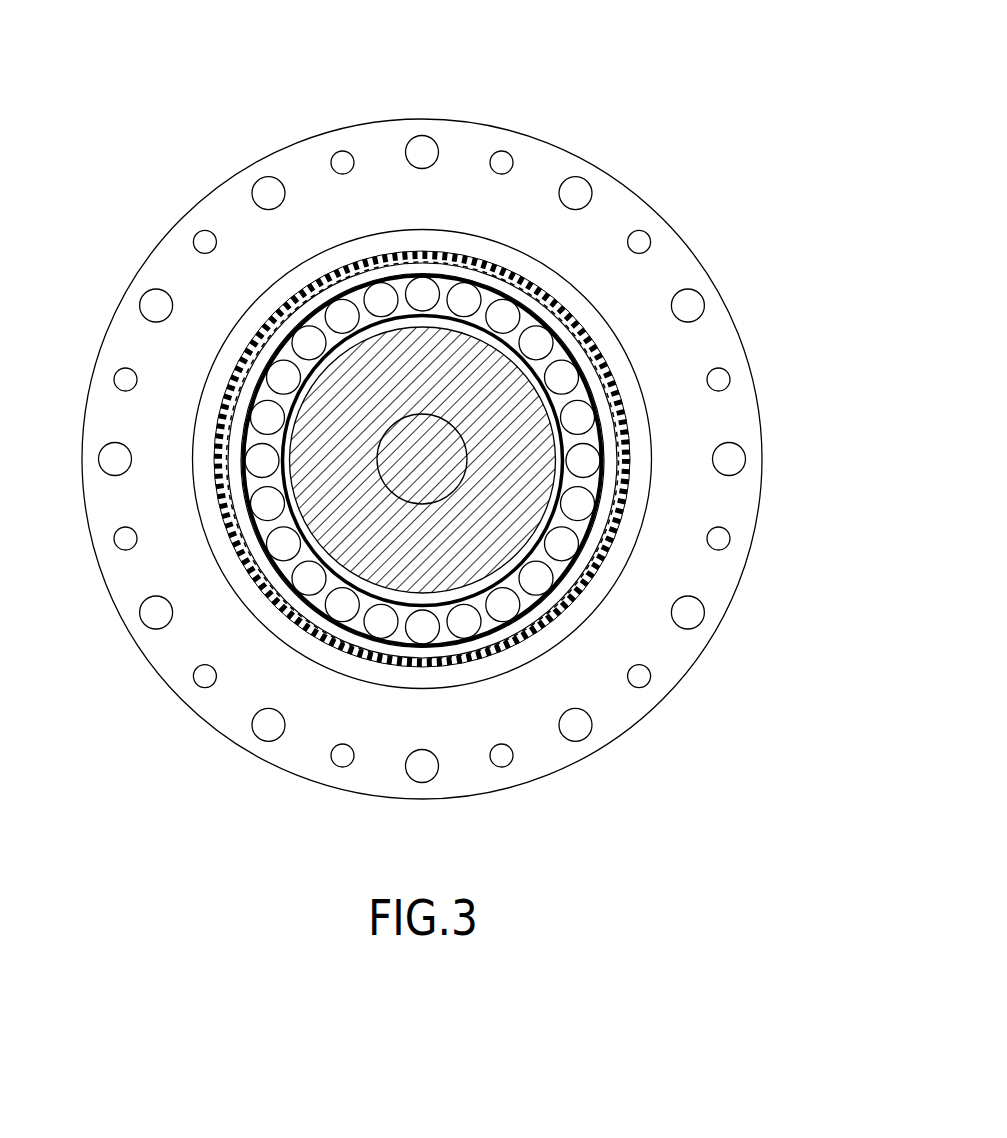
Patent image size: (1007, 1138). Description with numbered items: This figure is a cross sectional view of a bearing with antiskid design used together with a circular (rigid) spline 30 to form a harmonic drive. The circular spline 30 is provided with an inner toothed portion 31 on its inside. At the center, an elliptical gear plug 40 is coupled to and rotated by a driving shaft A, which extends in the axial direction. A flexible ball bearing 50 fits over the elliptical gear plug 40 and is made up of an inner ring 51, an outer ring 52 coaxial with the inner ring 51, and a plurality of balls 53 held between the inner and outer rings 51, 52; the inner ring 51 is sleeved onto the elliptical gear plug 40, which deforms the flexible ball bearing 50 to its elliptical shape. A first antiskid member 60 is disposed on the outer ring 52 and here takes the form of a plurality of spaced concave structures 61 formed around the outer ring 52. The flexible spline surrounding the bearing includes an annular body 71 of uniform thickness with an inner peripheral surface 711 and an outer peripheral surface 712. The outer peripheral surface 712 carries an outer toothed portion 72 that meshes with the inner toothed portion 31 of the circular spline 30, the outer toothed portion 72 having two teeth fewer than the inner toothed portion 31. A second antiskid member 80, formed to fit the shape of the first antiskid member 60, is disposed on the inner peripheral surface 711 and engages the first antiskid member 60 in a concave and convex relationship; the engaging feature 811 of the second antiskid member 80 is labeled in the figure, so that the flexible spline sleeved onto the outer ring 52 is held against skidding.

The circular spline 30 is at (526, 128).
The inner toothed portion 31 is at (625, 407).
The elliptical gear plug 40 is at (348, 552).
The flexible ball bearing 50 is at (511, 426).
The inner ring 51 is at (542, 342).
The outer ring 52 is at (567, 325).
The balls 53 is at (565, 343).
The first antiskid member 60 is at (423, 330).
The concave structure 61 is at (355, 292).
The annular body 71 is at (342, 415).
The inner peripheral surface 711 is at (262, 343).
The outer peripheral surface 712 is at (244, 367).
The outer toothed portion 72 is at (287, 328).
The second antiskid member 80 is at (422, 377).
The internal teeth of circular spline 811 is at (337, 273).
The driving shaft A is at (440, 487).